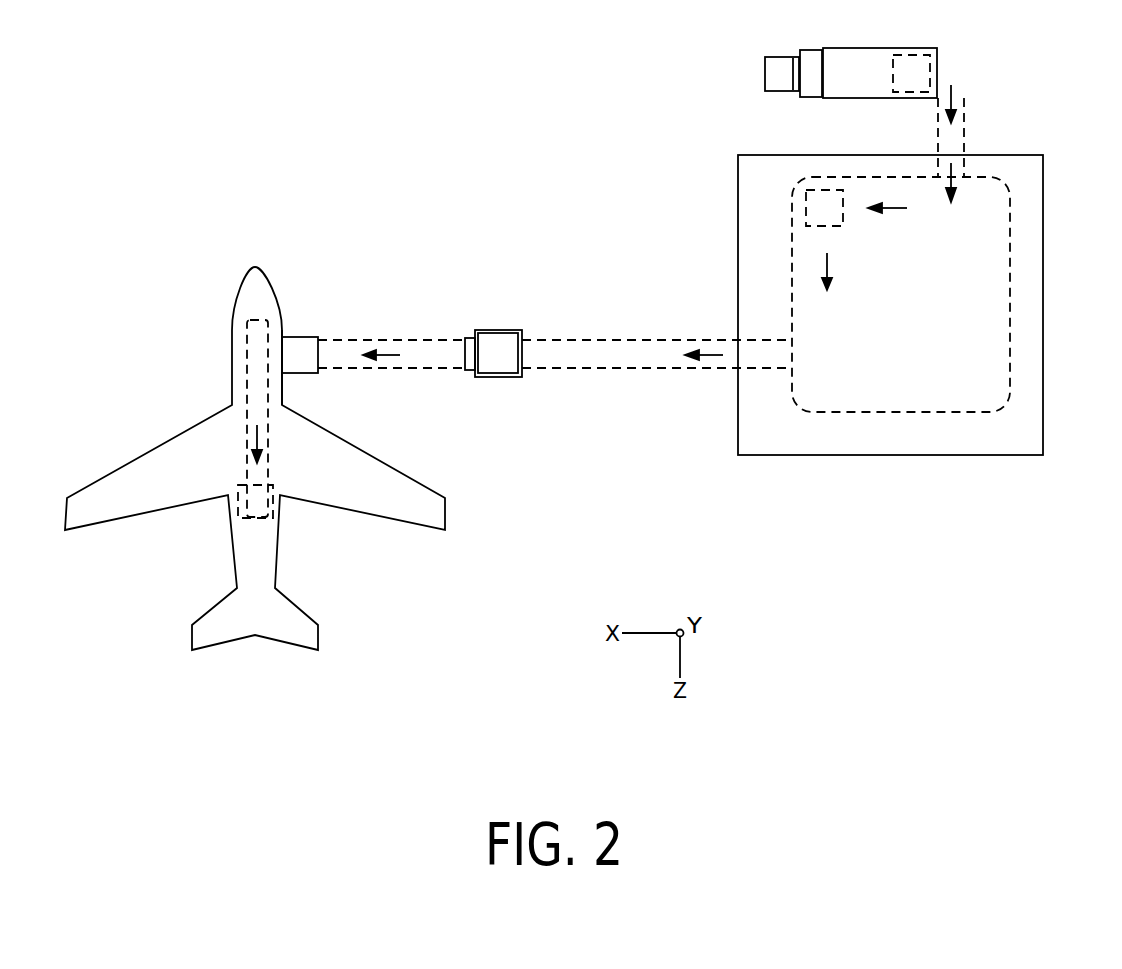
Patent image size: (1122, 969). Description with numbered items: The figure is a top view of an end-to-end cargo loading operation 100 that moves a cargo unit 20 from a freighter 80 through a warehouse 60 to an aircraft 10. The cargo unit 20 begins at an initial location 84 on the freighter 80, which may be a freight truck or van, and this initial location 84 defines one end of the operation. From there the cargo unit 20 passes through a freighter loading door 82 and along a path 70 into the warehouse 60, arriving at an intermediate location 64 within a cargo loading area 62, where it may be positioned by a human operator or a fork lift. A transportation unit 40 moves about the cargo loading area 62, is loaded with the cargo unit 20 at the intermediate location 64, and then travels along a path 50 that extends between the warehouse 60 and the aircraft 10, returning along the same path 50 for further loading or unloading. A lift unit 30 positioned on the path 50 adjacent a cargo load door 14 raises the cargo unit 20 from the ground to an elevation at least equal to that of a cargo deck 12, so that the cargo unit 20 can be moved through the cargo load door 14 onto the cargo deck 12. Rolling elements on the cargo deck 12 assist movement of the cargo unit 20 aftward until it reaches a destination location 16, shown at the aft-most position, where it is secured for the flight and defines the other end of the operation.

The end-to-end cargo loading operation 100 is at (219, 181).
The aircraft 10 is at (232, 384).
The cargo deck 12 is at (268, 412).
The cargo load door 14 is at (283, 337).
The destination location 16 is at (273, 508).
The cargo unit 20 is at (495, 342).
The lift unit 30 is at (303, 338).
The transportation unit 40 is at (522, 332).
The path 50 is at (622, 338).
The warehouse 60 is at (1043, 188).
The cargo loading area 62 is at (1010, 322).
The intermediate location 64 is at (806, 203).
The path 70 is at (966, 115).
The freighter 80 is at (920, 48).
The freighter loading door 82 is at (937, 68).
The initial location 84 is at (893, 57).